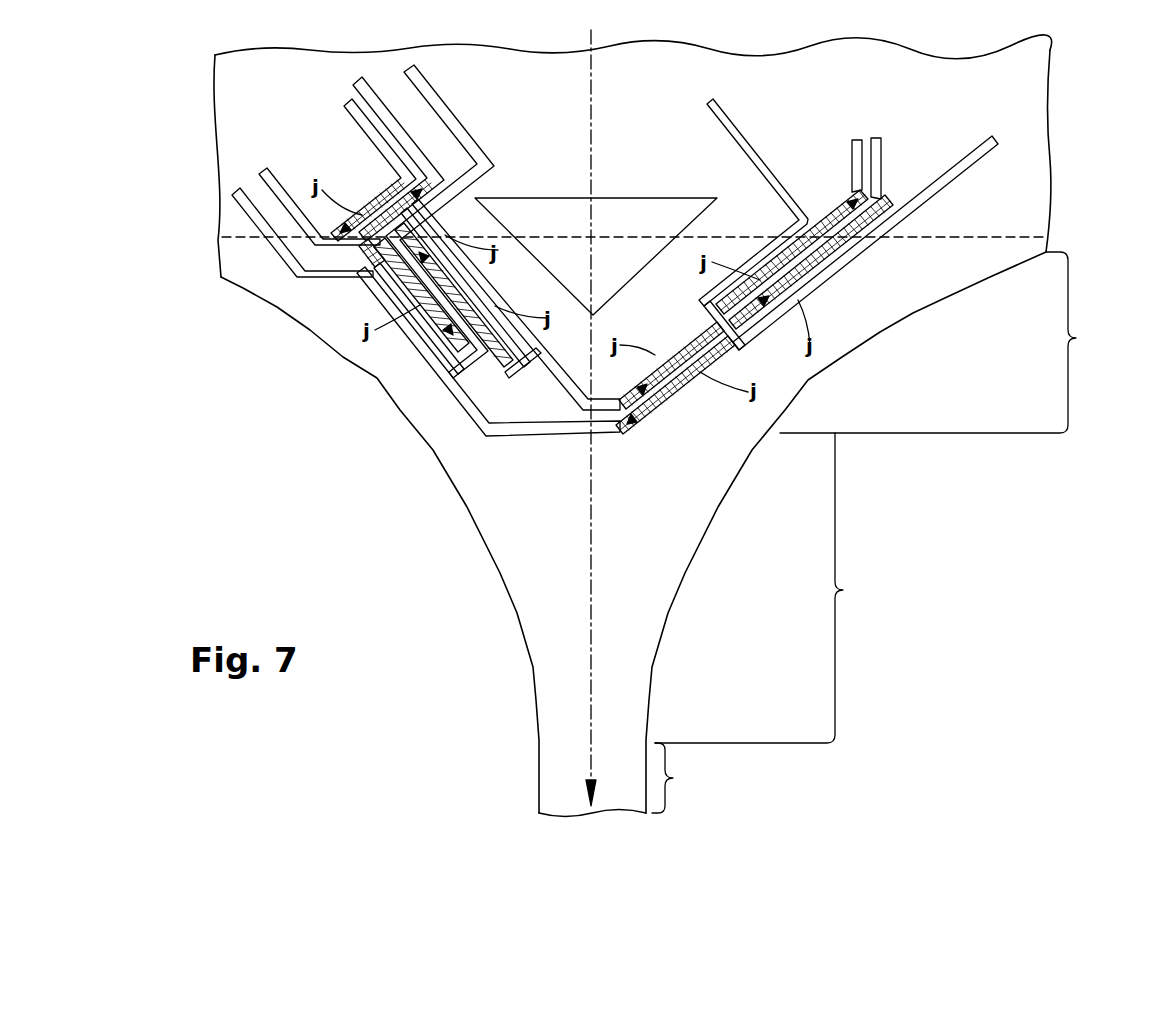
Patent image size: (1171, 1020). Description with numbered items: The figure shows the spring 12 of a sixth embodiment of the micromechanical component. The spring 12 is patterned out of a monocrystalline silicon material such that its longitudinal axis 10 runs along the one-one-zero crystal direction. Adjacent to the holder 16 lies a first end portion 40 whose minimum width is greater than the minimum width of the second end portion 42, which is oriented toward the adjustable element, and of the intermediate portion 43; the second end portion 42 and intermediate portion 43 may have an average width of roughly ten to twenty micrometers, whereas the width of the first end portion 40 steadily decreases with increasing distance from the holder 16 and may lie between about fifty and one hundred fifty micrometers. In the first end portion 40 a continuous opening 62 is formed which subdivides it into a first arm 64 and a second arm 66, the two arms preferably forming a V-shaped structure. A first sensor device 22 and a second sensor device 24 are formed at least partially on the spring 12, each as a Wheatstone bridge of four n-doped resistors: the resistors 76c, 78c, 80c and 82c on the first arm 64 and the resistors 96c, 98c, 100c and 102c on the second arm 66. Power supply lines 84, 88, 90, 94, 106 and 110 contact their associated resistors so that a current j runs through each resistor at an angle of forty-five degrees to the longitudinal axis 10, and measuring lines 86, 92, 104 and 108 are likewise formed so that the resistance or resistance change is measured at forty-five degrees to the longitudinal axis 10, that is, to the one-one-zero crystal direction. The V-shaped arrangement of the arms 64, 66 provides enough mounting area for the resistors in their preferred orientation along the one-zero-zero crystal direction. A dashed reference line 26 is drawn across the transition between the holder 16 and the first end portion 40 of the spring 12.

The longitudinal axis 10 is at (591, 690).
The spring 12 is at (633, 534).
The holder 16 is at (1020, 104).
The first sensor device 22 is at (400, 345).
The second sensor device 24 is at (790, 365).
The reference plane 26 is at (1020, 236).
The first end portion 40 is at (1076, 338).
The second end portion 42 is at (673, 778).
The intermediate portion 43 is at (843, 590).
The continuous opening 62 is at (608, 247).
The first arm 64 is at (425, 415).
The second arm 66 is at (855, 335).
The n-doped resistor 76c is at (442, 352).
The n-doped resistor 78c is at (470, 300).
The n-doped resistor 80c is at (370, 205).
The n-doped resistor 82c is at (370, 262).
The power supply line 84 is at (552, 434).
The measuring line 86 is at (263, 170).
The power supply line 88 is at (357, 118).
The power supply line 90 is at (535, 353).
The measuring line 92 is at (425, 110).
The power supply line 94 is at (352, 83).
The n-doped resistor 96c is at (698, 402).
The n-doped resistor 98c is at (690, 345).
The n-doped resistor 100c is at (848, 262).
The n-doped resistor 102c is at (838, 205).
The measuring line 104 is at (958, 185).
The power supply line 106 is at (882, 160).
The measuring line 108 is at (796, 222).
The power supply line 110 is at (856, 150).